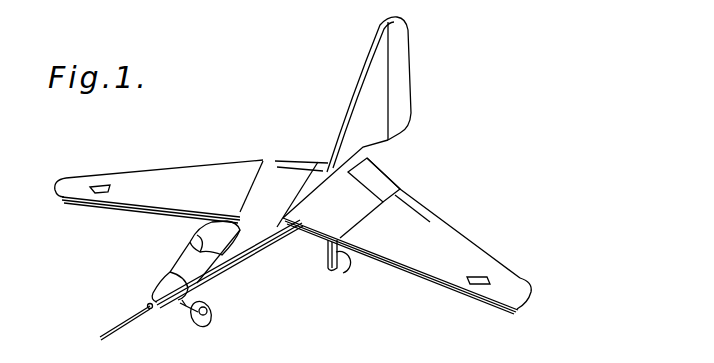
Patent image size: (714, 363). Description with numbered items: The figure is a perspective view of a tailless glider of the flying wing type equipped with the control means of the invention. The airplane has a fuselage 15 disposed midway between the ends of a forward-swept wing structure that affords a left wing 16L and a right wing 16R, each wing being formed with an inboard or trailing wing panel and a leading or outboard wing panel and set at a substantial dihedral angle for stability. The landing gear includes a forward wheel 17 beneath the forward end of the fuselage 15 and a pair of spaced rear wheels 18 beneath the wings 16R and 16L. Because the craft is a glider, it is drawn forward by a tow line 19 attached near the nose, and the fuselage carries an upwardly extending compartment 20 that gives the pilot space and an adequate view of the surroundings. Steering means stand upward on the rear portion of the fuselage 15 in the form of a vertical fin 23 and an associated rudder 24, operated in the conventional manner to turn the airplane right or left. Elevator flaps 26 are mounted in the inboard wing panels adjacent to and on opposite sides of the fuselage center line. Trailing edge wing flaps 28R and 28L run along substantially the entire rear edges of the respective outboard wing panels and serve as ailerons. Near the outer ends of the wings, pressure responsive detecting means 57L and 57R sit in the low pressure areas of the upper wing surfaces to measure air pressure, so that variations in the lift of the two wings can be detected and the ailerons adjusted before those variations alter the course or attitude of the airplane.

The fuselage 15 is at (253, 263).
The right wing 16R is at (144, 209).
The left wing 16L is at (442, 284).
The forward wheel 17 is at (196, 326).
The rear wheels 18 is at (338, 274).
The tow line 19 is at (135, 321).
The upwardly extending compartment 20 is at (190, 247).
The vertical fin 23 is at (375, 70).
The rudder 24 is at (405, 97).
The elevator flaps 26 is at (298, 163).
The right trailing edge wing flap 28R is at (188, 170).
The left trailing edge wing flap 28L is at (453, 232).
The right pressure responsive detecting means 57R is at (98, 192).
The left pressure responsive detecting means 57L is at (478, 285).